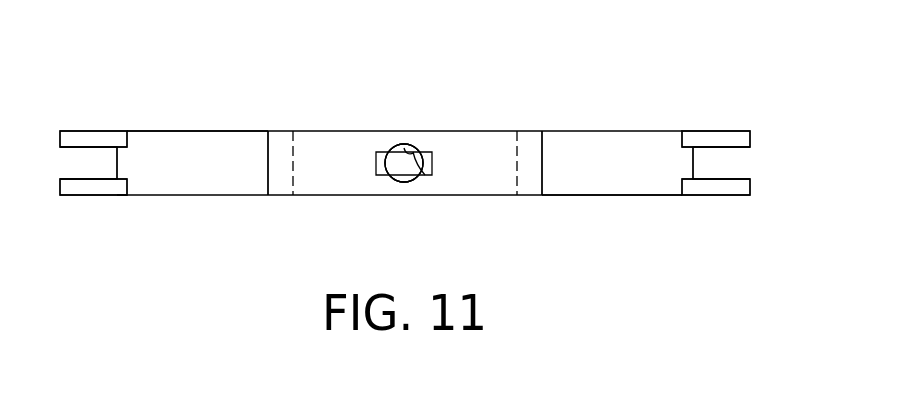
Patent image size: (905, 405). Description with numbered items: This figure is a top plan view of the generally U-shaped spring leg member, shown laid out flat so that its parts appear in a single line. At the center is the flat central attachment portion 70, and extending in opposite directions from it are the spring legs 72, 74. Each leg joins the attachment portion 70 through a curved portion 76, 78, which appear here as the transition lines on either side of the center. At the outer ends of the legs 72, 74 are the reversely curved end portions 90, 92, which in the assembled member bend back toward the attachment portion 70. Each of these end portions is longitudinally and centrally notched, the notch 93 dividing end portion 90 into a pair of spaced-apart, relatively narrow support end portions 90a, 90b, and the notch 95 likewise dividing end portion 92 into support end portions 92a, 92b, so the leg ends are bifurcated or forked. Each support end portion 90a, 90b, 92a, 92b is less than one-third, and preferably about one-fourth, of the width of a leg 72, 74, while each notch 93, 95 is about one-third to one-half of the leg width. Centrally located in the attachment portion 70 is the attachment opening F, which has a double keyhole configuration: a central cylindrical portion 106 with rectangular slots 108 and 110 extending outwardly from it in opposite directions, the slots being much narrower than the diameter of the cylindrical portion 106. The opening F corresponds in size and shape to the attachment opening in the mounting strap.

The flat central attachment portion 70 is at (480, 138).
The spring leg 72 is at (180, 130).
The spring leg 74 is at (642, 197).
The curved portion 76 is at (280, 197).
The curved portion 78 is at (528, 190).
The reversely curved end portion 90 is at (105, 131).
The reversely curved support end portion 90a is at (87, 197).
The reversely curved support end portion 90b is at (83, 130).
The notch 93 is at (68, 148).
The reversely curved end portion 92 is at (712, 131).
The reversely curved support end portion 92a is at (723, 197).
The reversely curved support end portion 92b is at (733, 132).
The notch 95 is at (742, 148).
The central cylindrical portion 106 is at (415, 153).
The rectangular slot 108 is at (393, 145).
The rectangular slot 110 is at (412, 182).
The attachment opening F is at (393, 186).